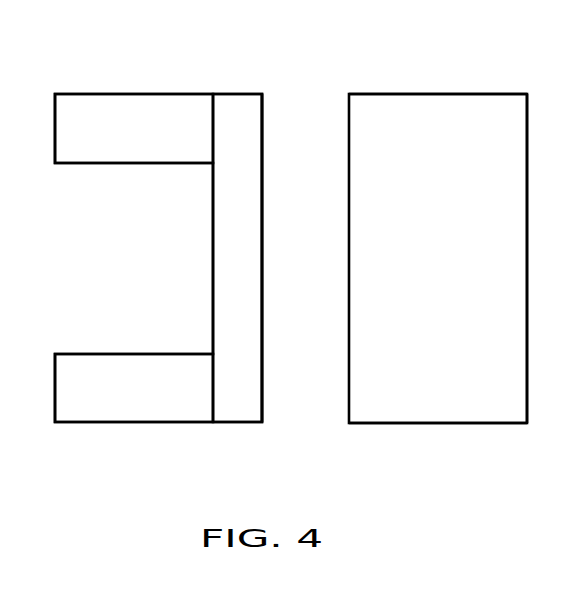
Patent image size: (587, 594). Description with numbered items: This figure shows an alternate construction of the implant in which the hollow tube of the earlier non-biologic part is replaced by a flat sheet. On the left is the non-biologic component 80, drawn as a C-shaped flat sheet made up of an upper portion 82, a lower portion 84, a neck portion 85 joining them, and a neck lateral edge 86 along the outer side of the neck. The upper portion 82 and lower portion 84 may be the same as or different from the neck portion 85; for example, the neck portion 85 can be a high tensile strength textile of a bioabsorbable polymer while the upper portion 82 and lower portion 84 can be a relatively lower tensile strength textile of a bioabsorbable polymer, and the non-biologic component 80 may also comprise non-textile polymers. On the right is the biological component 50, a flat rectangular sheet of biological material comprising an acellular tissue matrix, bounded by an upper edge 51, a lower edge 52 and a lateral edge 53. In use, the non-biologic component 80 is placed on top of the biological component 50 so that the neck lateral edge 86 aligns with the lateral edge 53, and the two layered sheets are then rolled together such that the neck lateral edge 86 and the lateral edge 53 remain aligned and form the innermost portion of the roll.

The non-biologic component 80 is at (166, 250).
The upper portion 82 is at (100, 94).
The lower portion 84 is at (105, 370).
The neck portion 85 is at (242, 393).
The neck lateral edge 86 is at (263, 372).
The biological component 50 is at (408, 127).
The upper edge 51 is at (483, 94).
The lower edge 52 is at (445, 423).
The lateral edge 53 is at (527, 378).